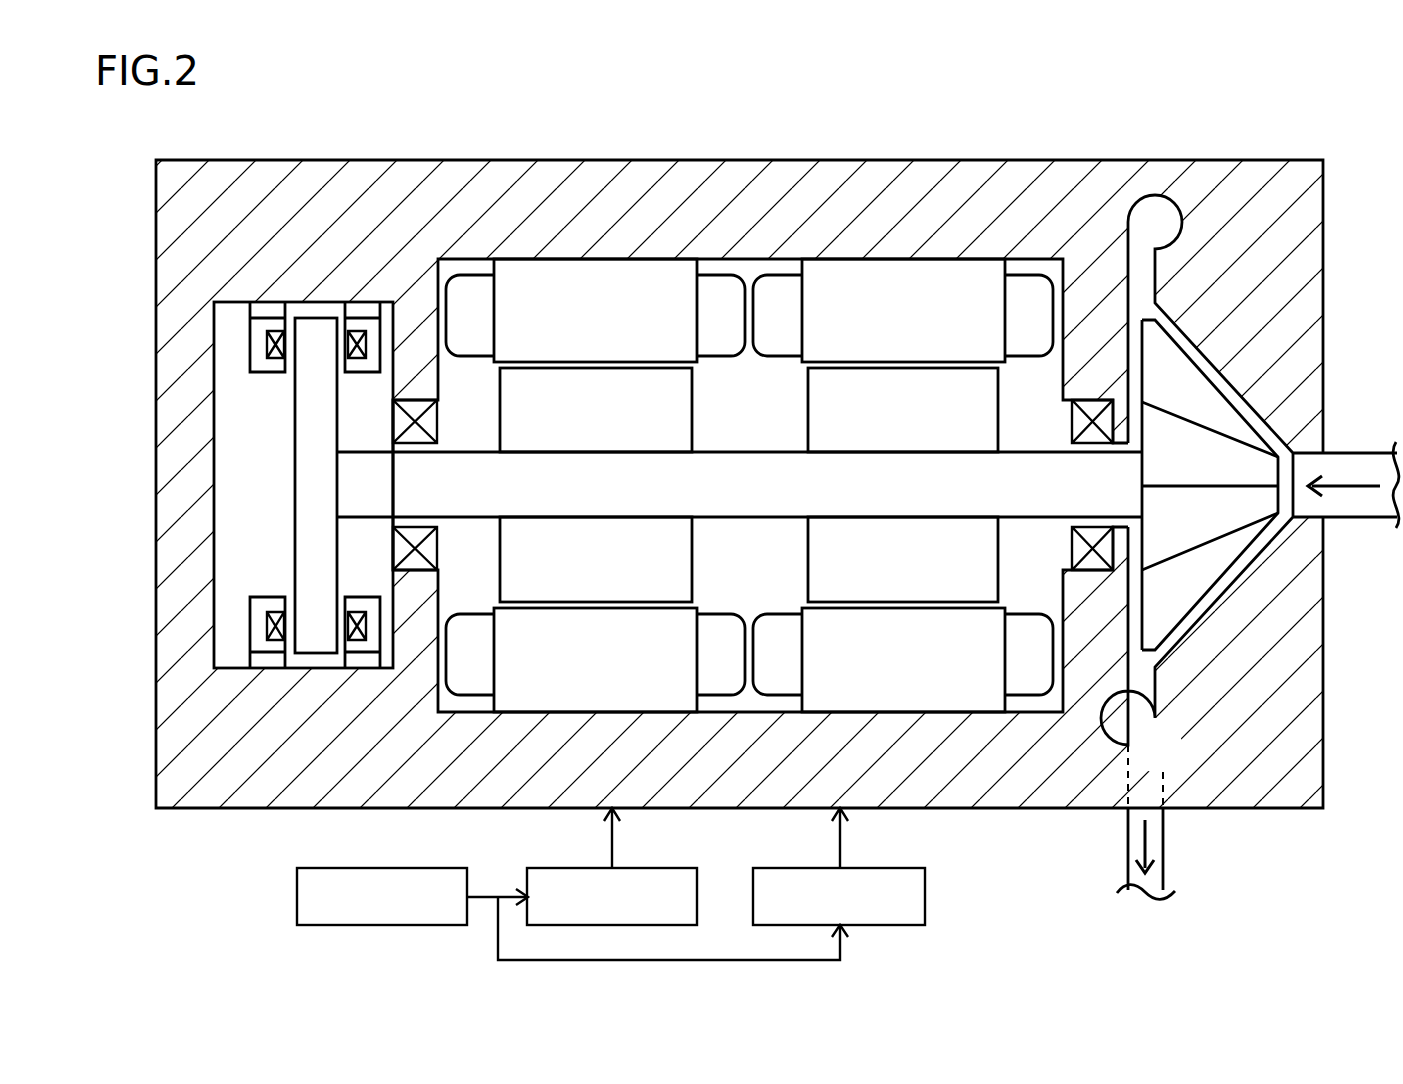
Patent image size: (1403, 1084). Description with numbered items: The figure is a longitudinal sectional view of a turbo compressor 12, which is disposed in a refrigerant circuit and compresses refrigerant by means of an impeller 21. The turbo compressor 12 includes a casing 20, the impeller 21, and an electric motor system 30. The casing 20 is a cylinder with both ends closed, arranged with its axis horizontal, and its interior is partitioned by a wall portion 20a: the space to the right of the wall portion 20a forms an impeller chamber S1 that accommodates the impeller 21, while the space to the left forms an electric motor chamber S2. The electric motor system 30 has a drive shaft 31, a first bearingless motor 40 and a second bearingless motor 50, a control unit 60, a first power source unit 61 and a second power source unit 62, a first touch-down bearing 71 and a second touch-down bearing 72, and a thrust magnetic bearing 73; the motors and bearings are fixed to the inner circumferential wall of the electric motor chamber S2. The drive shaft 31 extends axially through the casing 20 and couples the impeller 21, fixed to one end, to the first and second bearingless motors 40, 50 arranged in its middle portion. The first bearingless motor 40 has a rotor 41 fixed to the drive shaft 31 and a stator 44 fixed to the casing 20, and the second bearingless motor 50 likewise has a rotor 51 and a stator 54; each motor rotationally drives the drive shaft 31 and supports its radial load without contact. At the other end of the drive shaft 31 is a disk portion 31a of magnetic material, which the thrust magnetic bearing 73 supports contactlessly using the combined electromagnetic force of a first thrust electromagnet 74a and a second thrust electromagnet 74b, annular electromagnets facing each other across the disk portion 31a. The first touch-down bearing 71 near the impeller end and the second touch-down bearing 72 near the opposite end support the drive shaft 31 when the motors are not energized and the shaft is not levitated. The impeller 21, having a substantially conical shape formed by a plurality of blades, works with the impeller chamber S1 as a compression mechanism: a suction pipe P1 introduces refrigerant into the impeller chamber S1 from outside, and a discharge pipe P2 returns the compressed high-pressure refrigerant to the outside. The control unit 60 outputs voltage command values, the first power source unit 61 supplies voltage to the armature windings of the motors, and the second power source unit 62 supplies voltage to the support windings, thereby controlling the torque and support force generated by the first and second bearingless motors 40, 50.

The turbo compressor 12 is at (1301, 129).
The casing 20 is at (734, 157).
The wall portion 20a is at (1102, 668).
The impeller 21 is at (1208, 560).
The electric motor system 30 is at (682, 376).
The drive shaft 31 is at (753, 500).
The disk portion 31a is at (318, 482).
The first bearingless motor 40 is at (919, 256).
The rotor 41 is at (987, 413).
The stator 44 is at (858, 277).
The second bearingless motor 50 is at (554, 257).
The rotor 51 is at (518, 417).
The stator 54 is at (645, 280).
The control unit 60 is at (384, 868).
The first power source unit 61 is at (564, 868).
The second power source unit 62 is at (787, 868).
The first touch-down bearing 71 is at (1090, 400).
The second touch-down bearing 72 is at (415, 402).
The thrust magnetic bearing 73 is at (250, 338).
The first thrust electromagnet 74a is at (355, 322).
The second thrust electromagnet 74b is at (261, 322).
The impeller chamber S1 is at (1232, 390).
The electric motor chamber S2 is at (1021, 267).
The suction pipe P1 is at (1380, 508).
The discharge pipe P2 is at (1158, 838).